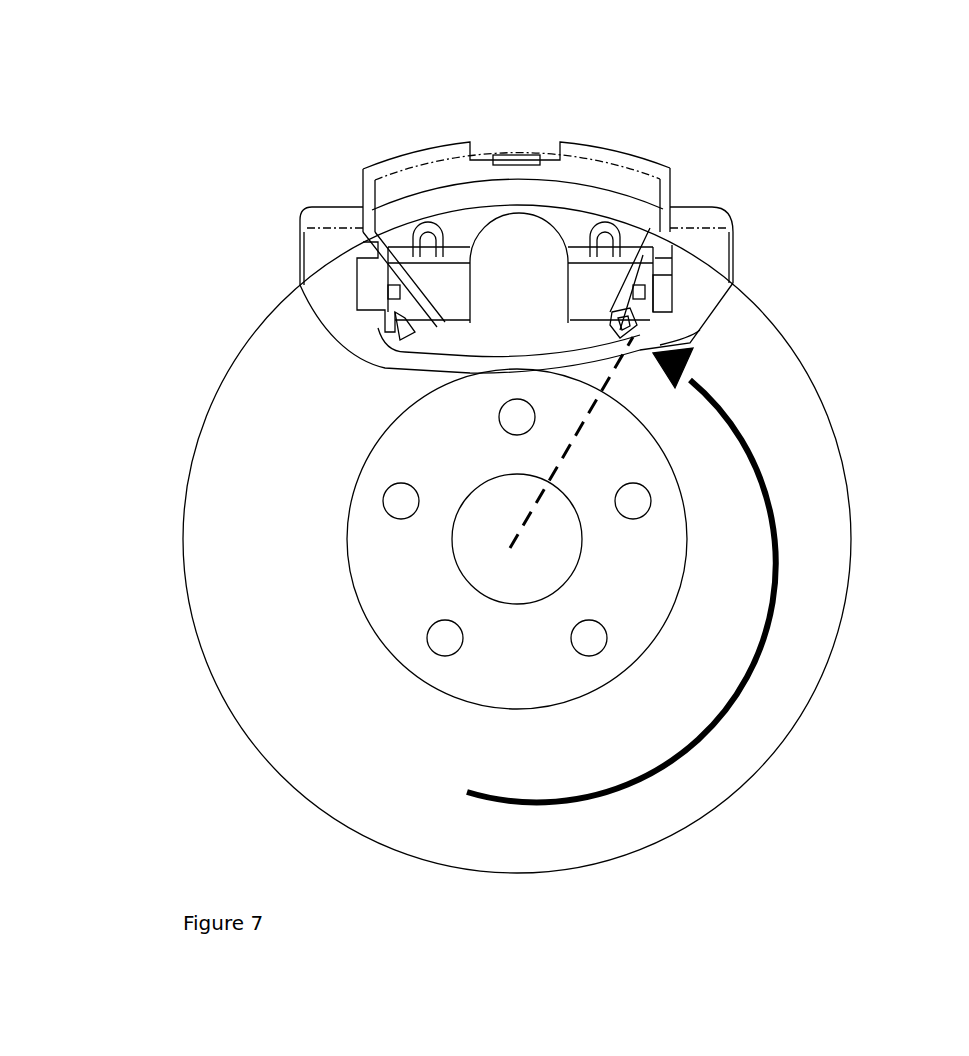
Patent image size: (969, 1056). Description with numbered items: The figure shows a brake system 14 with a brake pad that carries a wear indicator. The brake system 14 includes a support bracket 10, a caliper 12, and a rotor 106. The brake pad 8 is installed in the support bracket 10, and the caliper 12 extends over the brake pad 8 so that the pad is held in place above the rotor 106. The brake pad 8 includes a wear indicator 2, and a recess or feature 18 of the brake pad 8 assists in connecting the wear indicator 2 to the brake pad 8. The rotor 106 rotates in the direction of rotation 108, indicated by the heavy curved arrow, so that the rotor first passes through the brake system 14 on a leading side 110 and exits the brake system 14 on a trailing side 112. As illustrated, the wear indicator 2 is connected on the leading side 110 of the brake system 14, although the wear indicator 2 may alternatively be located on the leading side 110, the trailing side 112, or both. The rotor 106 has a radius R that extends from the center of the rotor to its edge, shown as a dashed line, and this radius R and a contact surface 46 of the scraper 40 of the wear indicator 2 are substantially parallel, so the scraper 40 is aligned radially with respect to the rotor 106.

The wear indicator 2 is at (680, 335).
The brake pad 8 is at (487, 275).
The support bracket 10 is at (706, 276).
The caliper 12 is at (580, 185).
The brake system 14 is at (188, 222).
The recess or feature 18 is at (388, 322).
The scraper 40 is at (608, 332).
The contact surface 46 is at (623, 323).
The rotor 106 is at (220, 507).
The direction of rotation 108 is at (727, 712).
The leading side 110 is at (707, 160).
The trailing side 112 is at (328, 160).
The radius R is at (592, 417).